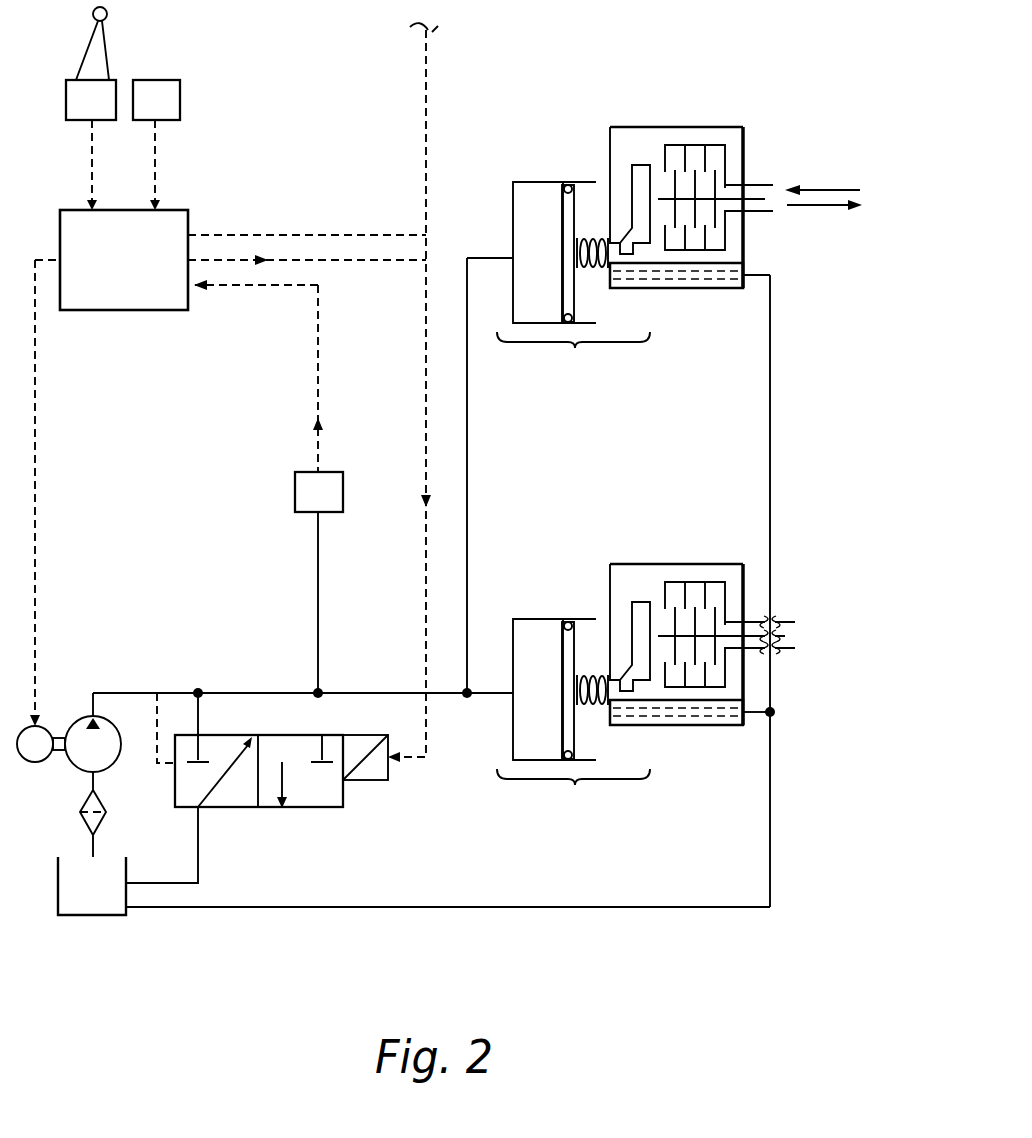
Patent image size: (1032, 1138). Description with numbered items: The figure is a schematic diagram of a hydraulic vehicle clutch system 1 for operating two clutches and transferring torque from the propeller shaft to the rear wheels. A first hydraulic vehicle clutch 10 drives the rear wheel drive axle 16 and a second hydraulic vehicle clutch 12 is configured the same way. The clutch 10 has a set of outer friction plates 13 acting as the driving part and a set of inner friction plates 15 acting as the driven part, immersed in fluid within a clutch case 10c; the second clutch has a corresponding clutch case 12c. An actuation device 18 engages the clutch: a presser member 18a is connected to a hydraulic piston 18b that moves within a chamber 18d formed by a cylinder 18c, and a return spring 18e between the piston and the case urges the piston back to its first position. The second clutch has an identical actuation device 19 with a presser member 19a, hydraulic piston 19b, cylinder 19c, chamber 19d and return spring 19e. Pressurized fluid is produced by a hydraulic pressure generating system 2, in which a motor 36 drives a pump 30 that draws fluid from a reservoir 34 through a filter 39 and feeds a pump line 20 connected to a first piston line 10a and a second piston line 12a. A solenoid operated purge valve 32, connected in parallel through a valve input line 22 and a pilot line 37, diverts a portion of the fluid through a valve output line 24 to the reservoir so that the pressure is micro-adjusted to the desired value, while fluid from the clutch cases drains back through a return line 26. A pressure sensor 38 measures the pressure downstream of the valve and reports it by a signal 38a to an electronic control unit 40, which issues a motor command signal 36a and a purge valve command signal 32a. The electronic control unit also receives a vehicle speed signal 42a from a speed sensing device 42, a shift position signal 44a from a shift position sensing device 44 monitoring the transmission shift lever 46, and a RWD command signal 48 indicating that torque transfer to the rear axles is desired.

The hydraulic vehicle clutch system 1 is at (240, 942).
The hydraulic pressure generating system 2 is at (155, 852).
The first hydraulic vehicle clutch 10 is at (645, 85).
The first piston line 10a is at (467, 405).
The clutch case 10c is at (693, 127).
The second hydraulic vehicle clutch 12 is at (645, 520).
The second piston line 12a is at (426, 650).
The clutch case 12c is at (693, 564).
The outer friction plates 13 is at (705, 158).
The inner friction plates 15 is at (715, 178).
The rear wheel drive axle 16 is at (752, 199).
The actuation device 18 is at (573, 352).
The presser member 18a is at (640, 165).
The hydraulic piston 18b is at (560, 205).
The cylinder 18c is at (540, 182).
The chamber 18d is at (530, 235).
The return spring 18e is at (590, 268).
The actuation device 19 is at (573, 790).
The presser member 19a is at (641, 602).
The hydraulic piston 19b is at (556, 640).
The cylinder 19c is at (535, 619).
The chamber 19d is at (522, 717).
The return spring 19e is at (590, 705).
The pump line 20 is at (143, 693).
The valve input line 22 is at (200, 717).
The valve output line 24 is at (198, 857).
The return line 26 is at (610, 907).
The pump 30 is at (67, 720).
The solenoid operated purge valve 32 is at (317, 808).
The purge valve command signal 32a is at (426, 447).
The reservoir 34 is at (97, 917).
The motor 36 is at (32, 762).
The motor command signal 36a is at (36, 483).
The pilot line 37 is at (155, 747).
The pressure sensor 38 is at (295, 493).
The pressure signal 38a is at (318, 365).
The filter 39 is at (87, 823).
The electronic control unit 40 is at (132, 310).
The speed sensing device 42 is at (180, 100).
The vehicle speed signal 42a is at (157, 170).
The shift position sensing device 44 is at (66, 100).
The shift position signal 44a is at (92, 163).
The transmission shift lever 46 is at (112, 53).
The RWD command signal 48 is at (302, 235).